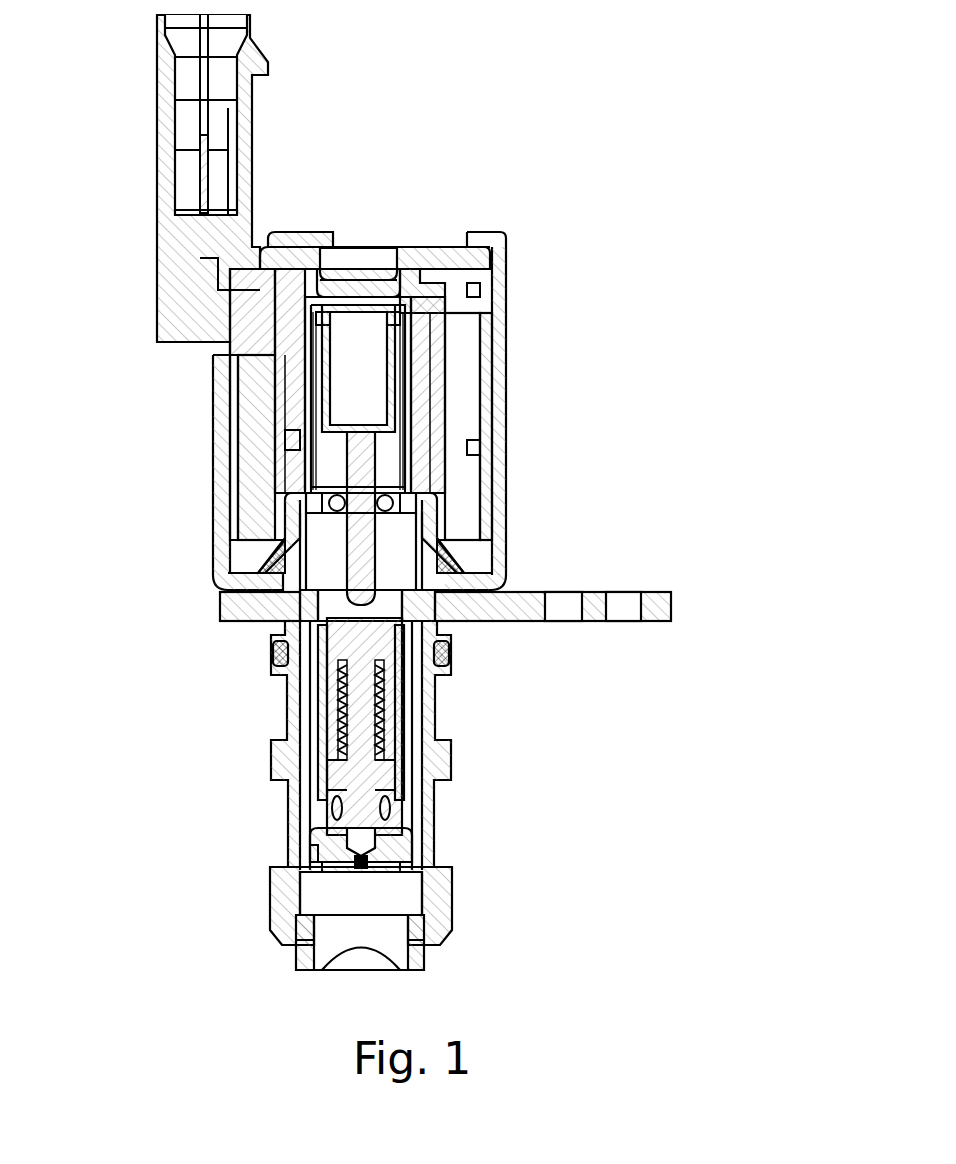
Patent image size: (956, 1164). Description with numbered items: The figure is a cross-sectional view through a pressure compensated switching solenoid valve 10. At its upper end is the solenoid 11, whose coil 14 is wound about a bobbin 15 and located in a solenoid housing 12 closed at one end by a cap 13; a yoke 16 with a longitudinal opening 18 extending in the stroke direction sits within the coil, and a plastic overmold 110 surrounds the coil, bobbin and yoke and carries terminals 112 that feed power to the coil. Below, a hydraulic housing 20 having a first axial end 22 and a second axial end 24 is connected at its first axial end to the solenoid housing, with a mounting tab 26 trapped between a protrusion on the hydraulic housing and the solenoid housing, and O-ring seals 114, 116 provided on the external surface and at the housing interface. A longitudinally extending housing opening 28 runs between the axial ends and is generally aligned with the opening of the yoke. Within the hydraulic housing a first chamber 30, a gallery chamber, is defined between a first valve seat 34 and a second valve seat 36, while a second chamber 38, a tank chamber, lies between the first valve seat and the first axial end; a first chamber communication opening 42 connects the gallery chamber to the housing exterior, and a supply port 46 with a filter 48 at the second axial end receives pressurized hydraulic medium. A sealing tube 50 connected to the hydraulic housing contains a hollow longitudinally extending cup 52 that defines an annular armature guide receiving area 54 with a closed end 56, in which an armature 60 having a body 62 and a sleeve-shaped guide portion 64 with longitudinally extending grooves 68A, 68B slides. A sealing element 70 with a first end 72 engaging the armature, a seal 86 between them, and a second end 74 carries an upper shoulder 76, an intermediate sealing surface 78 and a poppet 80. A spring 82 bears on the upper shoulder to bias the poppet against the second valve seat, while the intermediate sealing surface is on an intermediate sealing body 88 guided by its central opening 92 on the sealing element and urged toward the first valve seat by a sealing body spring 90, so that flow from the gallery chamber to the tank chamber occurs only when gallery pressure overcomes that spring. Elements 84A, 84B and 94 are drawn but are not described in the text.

The pressure compensated switching solenoid valve 10 is at (545, 85).
The solenoid 11 is at (508, 322).
The solenoid housing 12 is at (492, 378).
The cap 13 is at (420, 270).
The coil 14 is at (487, 242).
The bobbin 15 is at (262, 550).
The yoke 16 is at (236, 428).
The longitudinal opening 18 is at (338, 247).
The hydraulic housing 20 is at (455, 905).
The first axial end 22 is at (303, 515).
The second axial end 24 is at (426, 950).
The mounting tab 26 is at (523, 593).
The housing opening 28 is at (338, 905).
The first chamber 30 is at (358, 790).
The first valve seat 34 is at (338, 760).
The second valve seat 36 is at (398, 818).
The second chamber 38 is at (328, 720).
The first chamber communication opening 42 is at (316, 822).
The supply port 46 is at (423, 928).
The filter 48 is at (298, 951).
The sealing tube 50 is at (390, 465).
The hollow longitudinally extending cup 52 is at (330, 400).
The annular armature guide receiving area 54 is at (452, 432).
The closed end 56 is at (410, 300).
The armature 60 is at (300, 440).
The body 62 is at (430, 420).
The sleeve-shaped guide portion 64 is at (318, 332).
The longitudinally extending groove 68A is at (416, 340).
The longitudinally extending groove 68B is at (262, 300).
The sealing element 70 is at (328, 548).
The first end 72 is at (416, 505).
The second end 74 is at (400, 858).
The upper shoulder 76 is at (438, 600).
The intermediate sealing surface 78 is at (406, 750).
The poppet 80 is at (378, 850).
The spring 82 is at (318, 740).
The o-ring 84A is at (440, 656).
The o-ring 84B is at (283, 650).
The seal 86 is at (393, 503).
The intermediate sealing body 88 is at (392, 700).
The sealing body spring 90 is at (406, 740).
The central opening 92 is at (388, 780).
The passage 94 is at (333, 800).
The plastic overmold 110 is at (258, 97).
The terminals 112 is at (197, 162).
The O-ring seal 114 is at (518, 592).
The O-ring seal 116 is at (448, 700).